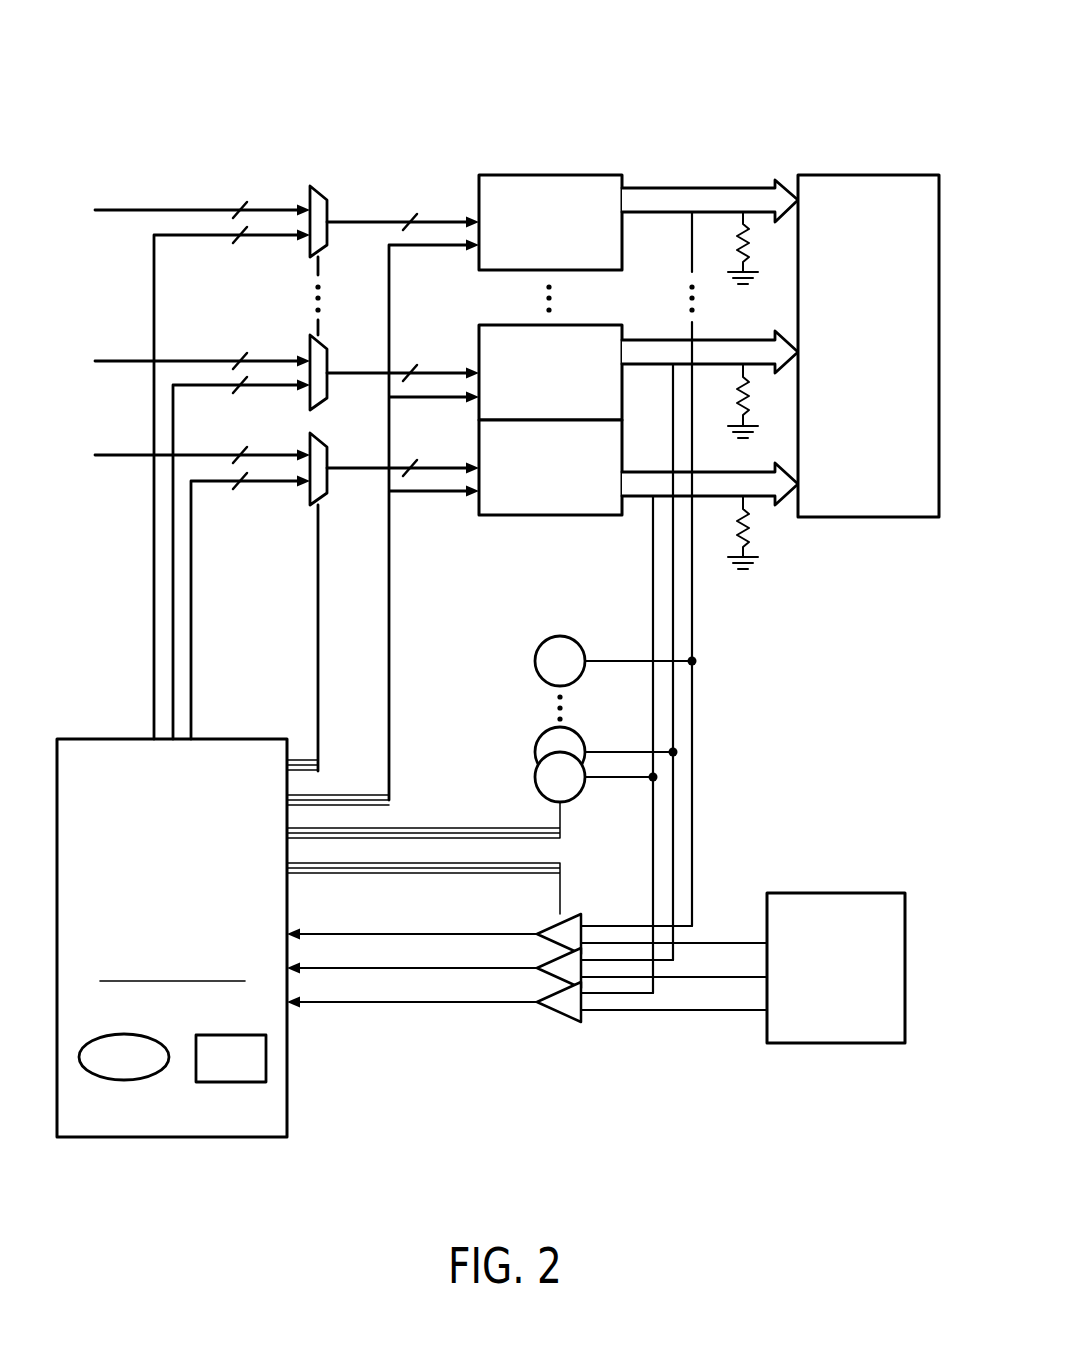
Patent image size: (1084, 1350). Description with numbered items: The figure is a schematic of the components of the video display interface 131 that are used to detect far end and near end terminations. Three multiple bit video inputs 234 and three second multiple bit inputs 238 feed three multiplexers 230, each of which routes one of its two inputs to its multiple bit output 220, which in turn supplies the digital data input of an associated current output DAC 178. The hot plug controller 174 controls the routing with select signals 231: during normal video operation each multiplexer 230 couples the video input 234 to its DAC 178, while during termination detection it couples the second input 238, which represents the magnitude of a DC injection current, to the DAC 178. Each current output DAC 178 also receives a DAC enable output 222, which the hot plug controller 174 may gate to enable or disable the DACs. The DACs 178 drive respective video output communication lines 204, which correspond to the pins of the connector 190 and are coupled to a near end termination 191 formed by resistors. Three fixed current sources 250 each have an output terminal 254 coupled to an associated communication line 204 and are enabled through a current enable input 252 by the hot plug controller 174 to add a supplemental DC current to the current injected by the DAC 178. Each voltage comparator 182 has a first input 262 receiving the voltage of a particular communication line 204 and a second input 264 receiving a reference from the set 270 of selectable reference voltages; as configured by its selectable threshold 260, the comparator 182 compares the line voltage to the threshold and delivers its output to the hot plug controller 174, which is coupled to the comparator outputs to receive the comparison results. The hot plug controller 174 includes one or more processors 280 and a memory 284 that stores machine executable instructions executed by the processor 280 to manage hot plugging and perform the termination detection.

The video display interface 131 is at (593, 83).
The hot plug controller 174 is at (232, 738).
The current output DAC 178 is at (549, 173).
The voltage comparator 182 is at (548, 956).
The connector 190 is at (868, 173).
The near end termination 191 is at (752, 243).
The video output communication line 204 is at (655, 215).
The multiple bit output 220 is at (376, 219).
The DAC enable output 222 is at (434, 242).
The multiplexer 230 is at (322, 193).
The select signal 231 is at (316, 263).
The multiple bit video input 234 is at (170, 208).
The second multiple bit input 238 is at (216, 240).
The fixed current source 250 is at (546, 640).
The current enable input 252 is at (562, 812).
The output terminal 254 is at (622, 702).
The selectable threshold 260 is at (561, 895).
The first input 262 is at (612, 928).
The second input 264 is at (712, 945).
The set of selectable reference voltages 270 is at (831, 892).
The processor 280 is at (118, 1081).
The memory 284 is at (231, 1034).